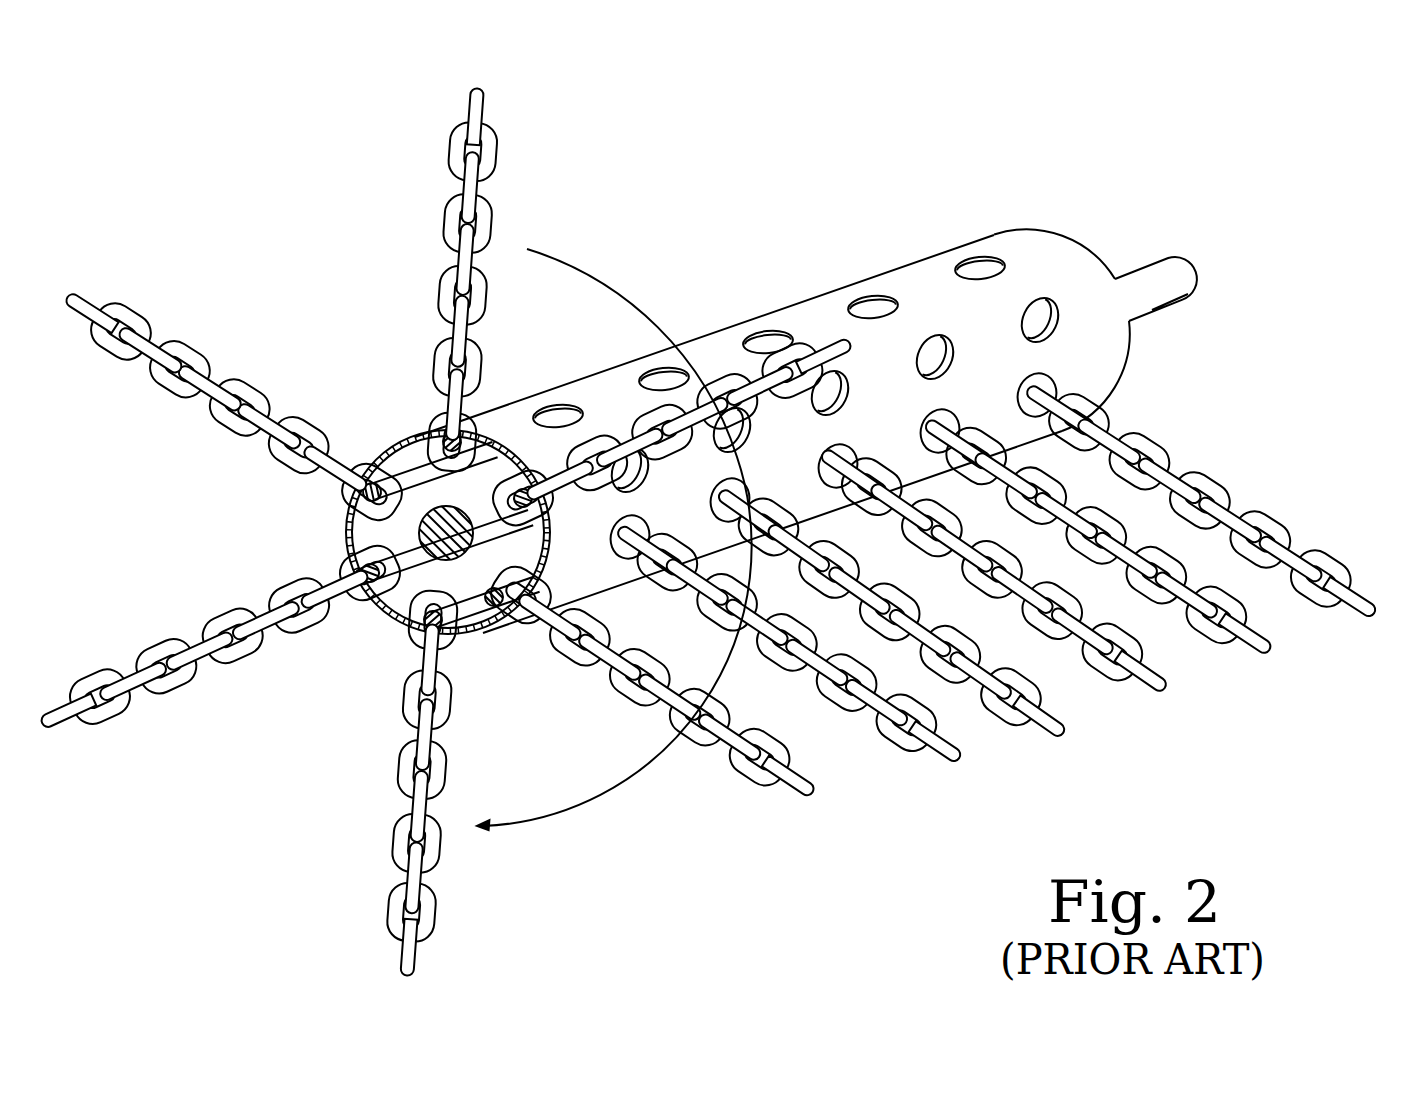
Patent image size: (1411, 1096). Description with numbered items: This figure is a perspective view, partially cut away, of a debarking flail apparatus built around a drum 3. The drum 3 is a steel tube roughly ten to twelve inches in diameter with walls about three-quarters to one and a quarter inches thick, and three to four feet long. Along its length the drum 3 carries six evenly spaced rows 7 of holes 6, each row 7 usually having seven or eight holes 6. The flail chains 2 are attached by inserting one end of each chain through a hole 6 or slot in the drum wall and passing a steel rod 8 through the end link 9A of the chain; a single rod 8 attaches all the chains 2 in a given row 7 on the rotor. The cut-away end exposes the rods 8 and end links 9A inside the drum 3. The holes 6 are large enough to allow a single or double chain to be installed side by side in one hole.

The chains 2 is at (960, 760).
The drum 3 is at (1031, 207).
The holes 6 is at (872, 302).
The rows 7 is at (1156, 386).
The steel rod 8 is at (496, 590).
The end link 9A is at (542, 625).